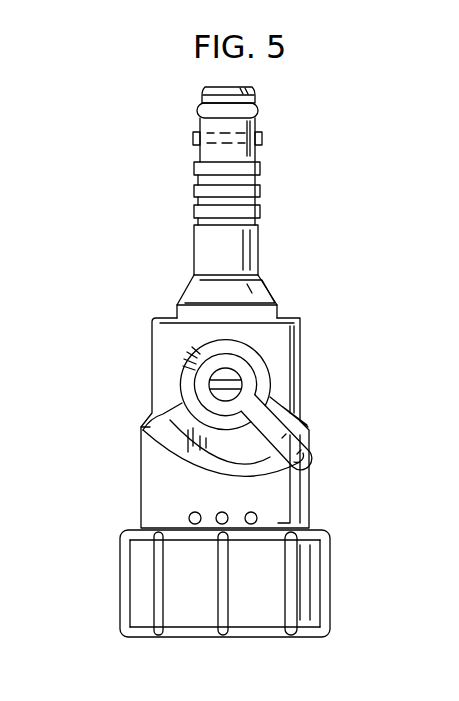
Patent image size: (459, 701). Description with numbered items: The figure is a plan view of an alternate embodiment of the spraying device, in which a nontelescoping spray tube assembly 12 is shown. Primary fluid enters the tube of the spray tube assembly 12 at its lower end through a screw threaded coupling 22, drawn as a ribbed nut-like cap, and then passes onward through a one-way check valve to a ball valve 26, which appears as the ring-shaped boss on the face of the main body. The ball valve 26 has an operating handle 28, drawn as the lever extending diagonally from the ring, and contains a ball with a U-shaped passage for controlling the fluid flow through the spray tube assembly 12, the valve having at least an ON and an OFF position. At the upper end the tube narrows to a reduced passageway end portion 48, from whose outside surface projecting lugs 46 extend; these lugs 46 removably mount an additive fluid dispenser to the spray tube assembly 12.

The spray tube assembly 12 is at (115, 297).
The reduced passageway end portion 48 is at (258, 121).
The projecting lugs 46 is at (262, 137).
The ball valve 26 is at (130, 405).
The operating handle 28 is at (280, 402).
The screw threaded coupling 22 is at (320, 590).